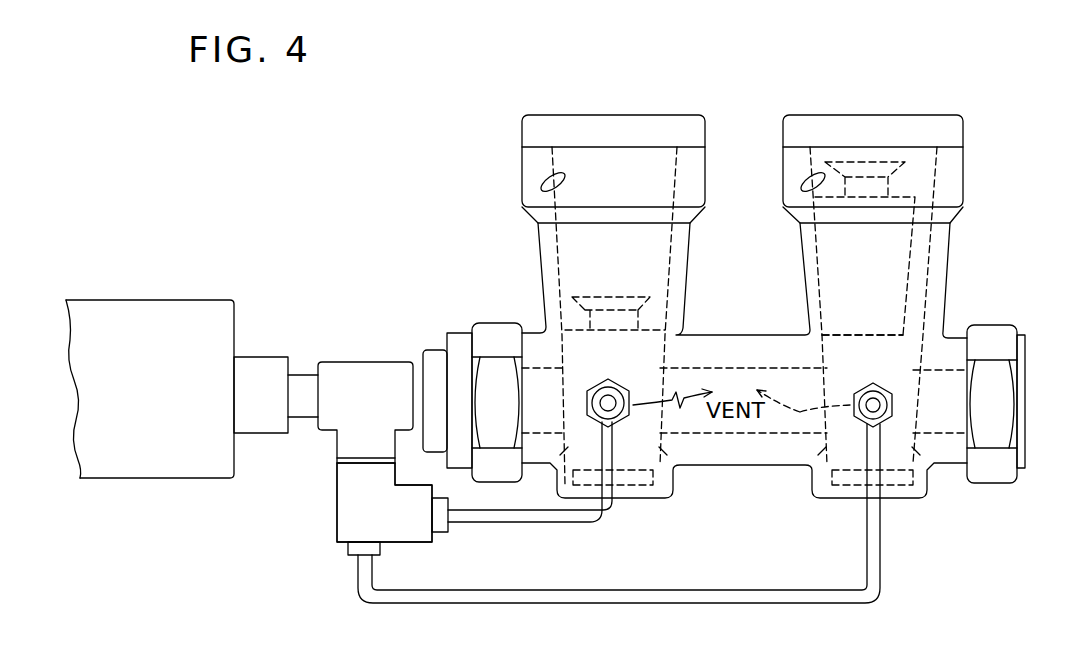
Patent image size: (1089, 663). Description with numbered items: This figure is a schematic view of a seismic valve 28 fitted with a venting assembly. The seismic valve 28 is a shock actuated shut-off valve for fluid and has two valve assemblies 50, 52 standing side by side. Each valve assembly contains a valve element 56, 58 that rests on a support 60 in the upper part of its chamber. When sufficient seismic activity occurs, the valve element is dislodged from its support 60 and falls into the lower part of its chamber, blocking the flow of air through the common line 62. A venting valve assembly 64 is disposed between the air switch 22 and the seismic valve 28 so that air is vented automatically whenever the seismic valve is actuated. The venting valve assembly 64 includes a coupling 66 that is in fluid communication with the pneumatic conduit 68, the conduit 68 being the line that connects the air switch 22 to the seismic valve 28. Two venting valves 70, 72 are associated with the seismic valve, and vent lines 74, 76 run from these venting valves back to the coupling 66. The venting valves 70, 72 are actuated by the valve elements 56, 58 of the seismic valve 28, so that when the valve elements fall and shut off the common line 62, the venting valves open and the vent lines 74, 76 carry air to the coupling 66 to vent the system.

The air switch 22 is at (242, 300).
The seismic valve 28 is at (542, 93).
The valve assembly 50 is at (487, 178).
The valve assembly 52 is at (978, 108).
The valve element 56 is at (640, 352).
The valve element 58 is at (883, 256).
The support 60 is at (543, 173).
The common line 62 is at (942, 432).
The venting valve assembly 64 is at (312, 554).
The coupling 66 is at (337, 507).
The pneumatic conduit 68 is at (272, 357).
The venting valve 70 is at (882, 385).
The venting valve 72 is at (602, 382).
The vent line 74 is at (578, 522).
The vent line 76 is at (578, 604).